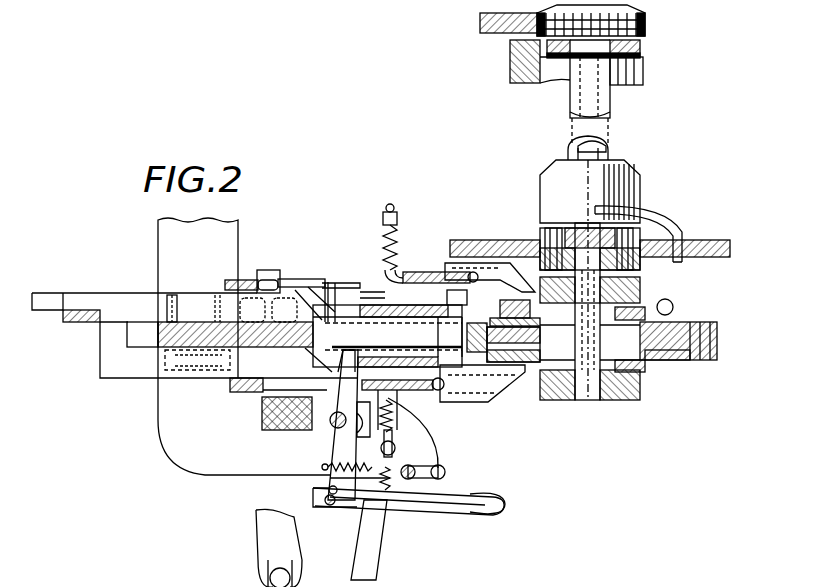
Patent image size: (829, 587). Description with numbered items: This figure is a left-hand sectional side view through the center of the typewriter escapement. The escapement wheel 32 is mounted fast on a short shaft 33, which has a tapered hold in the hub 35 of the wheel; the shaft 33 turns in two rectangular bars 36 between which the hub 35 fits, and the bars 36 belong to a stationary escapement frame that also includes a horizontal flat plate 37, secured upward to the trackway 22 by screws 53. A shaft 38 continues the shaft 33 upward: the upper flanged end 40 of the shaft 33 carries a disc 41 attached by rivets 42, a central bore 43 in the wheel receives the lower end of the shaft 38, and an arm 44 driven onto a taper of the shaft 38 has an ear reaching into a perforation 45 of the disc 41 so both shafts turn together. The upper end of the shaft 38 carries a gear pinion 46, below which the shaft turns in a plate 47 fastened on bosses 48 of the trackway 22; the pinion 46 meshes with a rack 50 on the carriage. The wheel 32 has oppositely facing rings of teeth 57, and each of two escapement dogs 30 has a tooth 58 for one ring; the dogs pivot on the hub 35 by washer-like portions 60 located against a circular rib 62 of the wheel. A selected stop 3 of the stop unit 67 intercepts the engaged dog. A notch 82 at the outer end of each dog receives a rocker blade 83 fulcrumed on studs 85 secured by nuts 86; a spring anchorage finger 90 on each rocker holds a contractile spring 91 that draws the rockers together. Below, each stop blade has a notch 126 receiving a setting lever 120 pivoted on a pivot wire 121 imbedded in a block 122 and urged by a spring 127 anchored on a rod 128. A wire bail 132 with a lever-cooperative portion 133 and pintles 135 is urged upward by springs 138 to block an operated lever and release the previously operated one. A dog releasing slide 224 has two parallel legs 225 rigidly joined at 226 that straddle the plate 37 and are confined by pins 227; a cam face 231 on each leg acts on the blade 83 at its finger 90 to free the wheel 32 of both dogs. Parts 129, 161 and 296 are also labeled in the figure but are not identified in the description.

The stop blade 3 is at (340, 318).
The trackway 22 is at (510, 57).
The escapement dogs 30 is at (488, 262).
The escapement wheel 32 is at (706, 318).
The short shaft 33 is at (588, 400).
The hub 35 is at (572, 400).
The bars 36 is at (648, 290).
The horizontal flat plate 37 is at (160, 333).
The shaft 38 is at (610, 104).
The upper flanged end 40 is at (540, 272).
The disc 41 is at (730, 248).
The rivets 42 is at (545, 236).
The central bore 43 is at (580, 230).
The arm 44 is at (600, 212).
The perforation 45 is at (690, 236).
The gear pinion 46 is at (645, 22).
The plate 47 is at (640, 48).
The bosses 48 is at (643, 72).
The rack 50 is at (480, 22).
The screws 53 is at (165, 380).
The rings of teeth 57 is at (717, 352).
The tooth 58 is at (482, 320).
The washer-like portion 60 is at (660, 300).
The circular rib 62 is at (660, 362).
The stop unit 67 is at (366, 298).
The notch 82 is at (446, 272).
The rocker blade 83 is at (306, 280).
The studs 85 is at (265, 268).
The nuts 86 is at (290, 278).
The spring anchorage finger 90 is at (395, 238).
The contractile spring 91 is at (380, 248).
The setting lever 120 is at (316, 484).
The pivot wire 121 is at (332, 448).
The block 122 is at (262, 437).
The notch 126 is at (343, 347).
The spring 127 is at (300, 476).
The rod 128 is at (443, 470).
The member 129 is at (258, 578).
The bail 132 is at (464, 512).
The lever-cooperative portion 133 is at (337, 504).
The pintle 135 is at (500, 498).
The springs 138 is at (388, 490).
The plate 161 is at (362, 542).
The dog releasing slide 224 is at (147, 283).
The legs 225 is at (134, 380).
The junction of slide legs 226 is at (108, 302).
The pins 227 is at (178, 308).
The cam face 231 is at (388, 292).
The block 296 is at (84, 322).